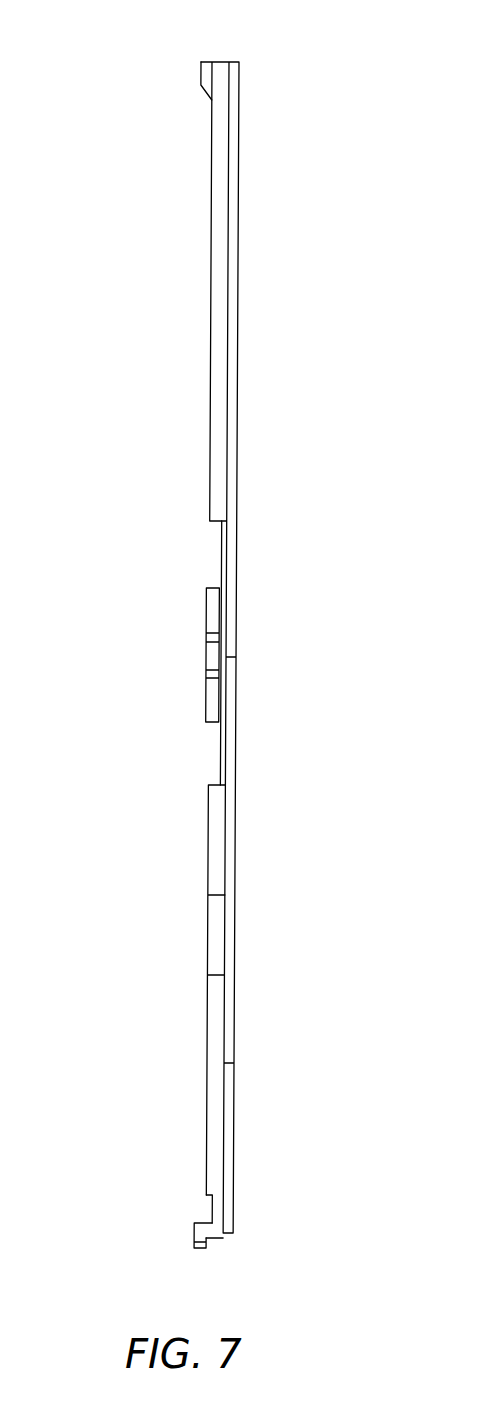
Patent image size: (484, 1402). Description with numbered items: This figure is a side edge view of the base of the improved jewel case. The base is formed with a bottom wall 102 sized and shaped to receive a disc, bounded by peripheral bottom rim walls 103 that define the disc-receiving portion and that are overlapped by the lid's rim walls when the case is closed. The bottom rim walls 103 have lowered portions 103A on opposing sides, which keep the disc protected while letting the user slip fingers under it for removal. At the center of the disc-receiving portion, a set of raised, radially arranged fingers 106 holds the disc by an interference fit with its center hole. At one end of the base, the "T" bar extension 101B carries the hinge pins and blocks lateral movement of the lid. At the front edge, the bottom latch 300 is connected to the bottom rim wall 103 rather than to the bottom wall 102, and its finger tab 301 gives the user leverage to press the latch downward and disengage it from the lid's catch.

The "T" bar extension 101B is at (201, 80).
The bottom wall 102 is at (238, 328).
The lowered portions 103A is at (225, 571).
The raised, radially arranged fingers 106 is at (206, 616).
The bottom rim walls 103 is at (207, 1045).
The bottom latch 300 is at (225, 1238).
The finger tab 301 is at (194, 1246).